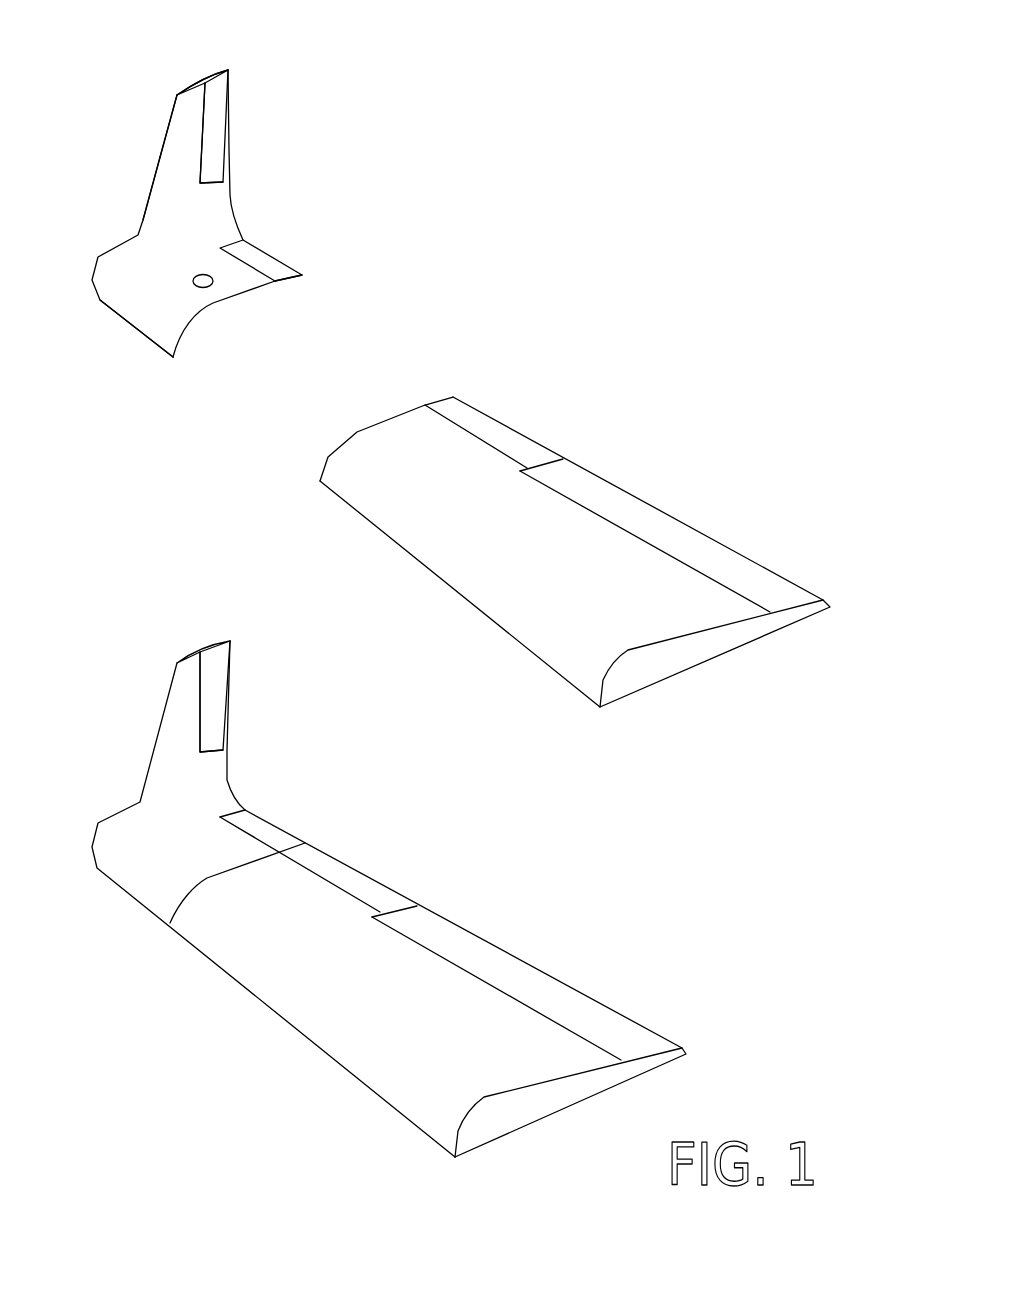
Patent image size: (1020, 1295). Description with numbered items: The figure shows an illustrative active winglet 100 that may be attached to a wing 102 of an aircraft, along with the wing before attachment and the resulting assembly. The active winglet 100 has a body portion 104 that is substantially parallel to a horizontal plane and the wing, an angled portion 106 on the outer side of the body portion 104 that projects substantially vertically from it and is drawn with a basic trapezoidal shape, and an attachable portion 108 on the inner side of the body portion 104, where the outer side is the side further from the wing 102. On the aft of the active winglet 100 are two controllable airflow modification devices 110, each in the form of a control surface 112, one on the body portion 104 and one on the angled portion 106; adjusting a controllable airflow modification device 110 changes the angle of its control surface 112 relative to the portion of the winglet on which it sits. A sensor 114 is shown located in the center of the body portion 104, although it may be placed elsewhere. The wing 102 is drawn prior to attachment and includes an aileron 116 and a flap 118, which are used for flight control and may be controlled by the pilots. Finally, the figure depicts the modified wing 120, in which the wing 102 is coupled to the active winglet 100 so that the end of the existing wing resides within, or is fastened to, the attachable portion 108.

The active winglet 100 is at (253, 180).
The wing 102 is at (608, 460).
The body portion 104 is at (172, 282).
The angled portion 106 is at (175, 143).
The attachable portion 108 is at (223, 318).
The controllable airflow modification device 110 is at (228, 72).
The control surface 112 is at (217, 127).
The sensor 114 is at (196, 284).
The aileron 116 is at (487, 430).
The flap 118 is at (655, 523).
The modified wing 120 is at (406, 879).